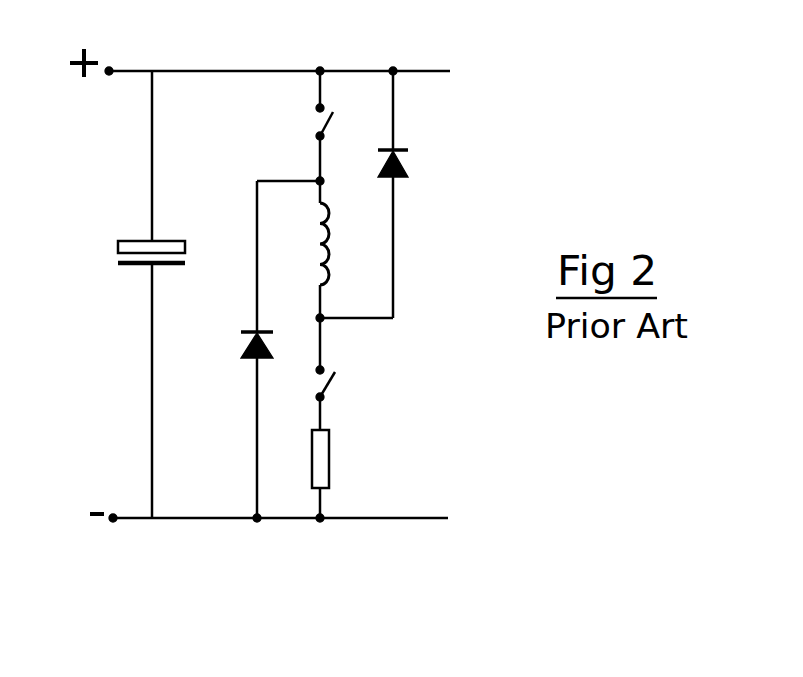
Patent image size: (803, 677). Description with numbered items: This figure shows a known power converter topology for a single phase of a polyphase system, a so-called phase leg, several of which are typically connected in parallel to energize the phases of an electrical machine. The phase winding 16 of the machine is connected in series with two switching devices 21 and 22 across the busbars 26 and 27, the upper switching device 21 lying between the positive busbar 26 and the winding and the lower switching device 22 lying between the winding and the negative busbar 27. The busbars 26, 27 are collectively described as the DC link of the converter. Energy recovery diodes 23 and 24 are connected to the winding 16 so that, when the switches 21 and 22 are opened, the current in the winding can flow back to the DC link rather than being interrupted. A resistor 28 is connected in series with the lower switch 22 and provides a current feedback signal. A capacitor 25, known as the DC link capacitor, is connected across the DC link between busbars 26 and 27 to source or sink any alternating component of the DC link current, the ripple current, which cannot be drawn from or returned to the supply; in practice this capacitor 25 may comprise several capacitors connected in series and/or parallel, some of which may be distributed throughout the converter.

The phase winding 16 is at (340, 223).
The switching device 21 is at (317, 126).
The switching device 22 is at (338, 385).
The energy recovery diode 23 is at (412, 160).
The energy recovery diode 24 is at (242, 339).
The capacitor 25 is at (116, 257).
The busbar 26 is at (228, 71).
The busbar 27 is at (212, 518).
The resistor 28 is at (331, 456).